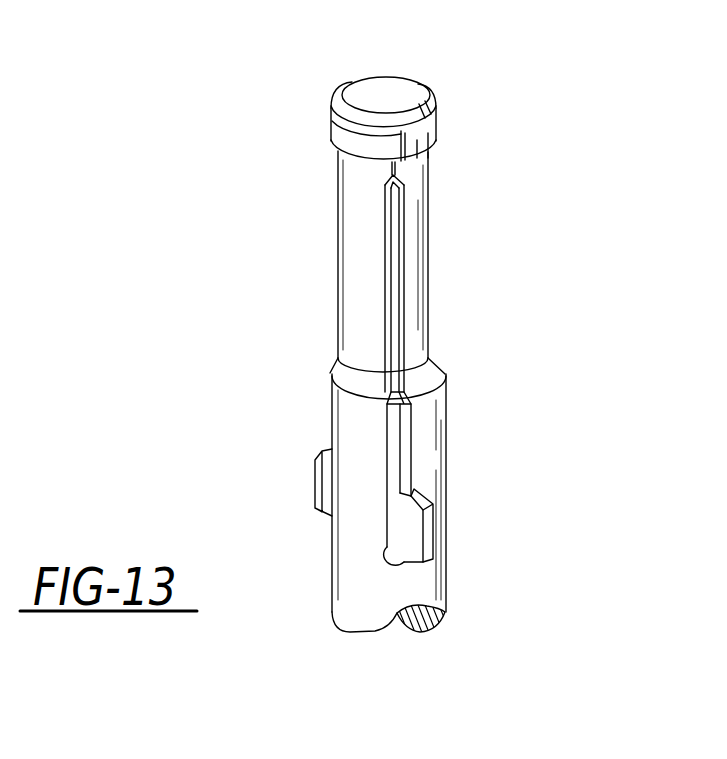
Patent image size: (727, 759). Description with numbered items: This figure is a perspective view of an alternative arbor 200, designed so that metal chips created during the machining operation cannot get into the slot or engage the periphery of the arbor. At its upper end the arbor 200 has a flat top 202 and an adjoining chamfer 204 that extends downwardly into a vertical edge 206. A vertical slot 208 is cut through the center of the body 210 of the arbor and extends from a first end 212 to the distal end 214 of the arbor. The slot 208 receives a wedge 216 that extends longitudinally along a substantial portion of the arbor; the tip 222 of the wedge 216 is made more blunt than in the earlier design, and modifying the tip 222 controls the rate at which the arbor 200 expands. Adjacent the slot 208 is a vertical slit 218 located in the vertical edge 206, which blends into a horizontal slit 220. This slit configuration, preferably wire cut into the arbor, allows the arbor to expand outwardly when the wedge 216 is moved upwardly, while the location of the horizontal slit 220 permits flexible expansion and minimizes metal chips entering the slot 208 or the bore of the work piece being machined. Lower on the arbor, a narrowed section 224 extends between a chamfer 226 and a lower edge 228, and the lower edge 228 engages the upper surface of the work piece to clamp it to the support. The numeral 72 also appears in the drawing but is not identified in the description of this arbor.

The arbor 200 is at (237, 245).
The flat top 202 is at (389, 95).
The chamfer 204 is at (427, 102).
The vertical edge 206 is at (433, 128).
The vertical slot 208 is at (402, 263).
The body 210 is at (428, 220).
The first end 212 is at (427, 585).
The distal end 214 is at (428, 183).
The wedge 216 is at (407, 430).
The vertical slit 218 is at (430, 148).
The horizontal slit 220 is at (333, 130).
The tip 222 is at (392, 202).
The narrowed section 224 is at (357, 297).
The chamfer 226 is at (337, 376).
The lower edge 228 is at (430, 158).
The latch foot 72 is at (428, 530).